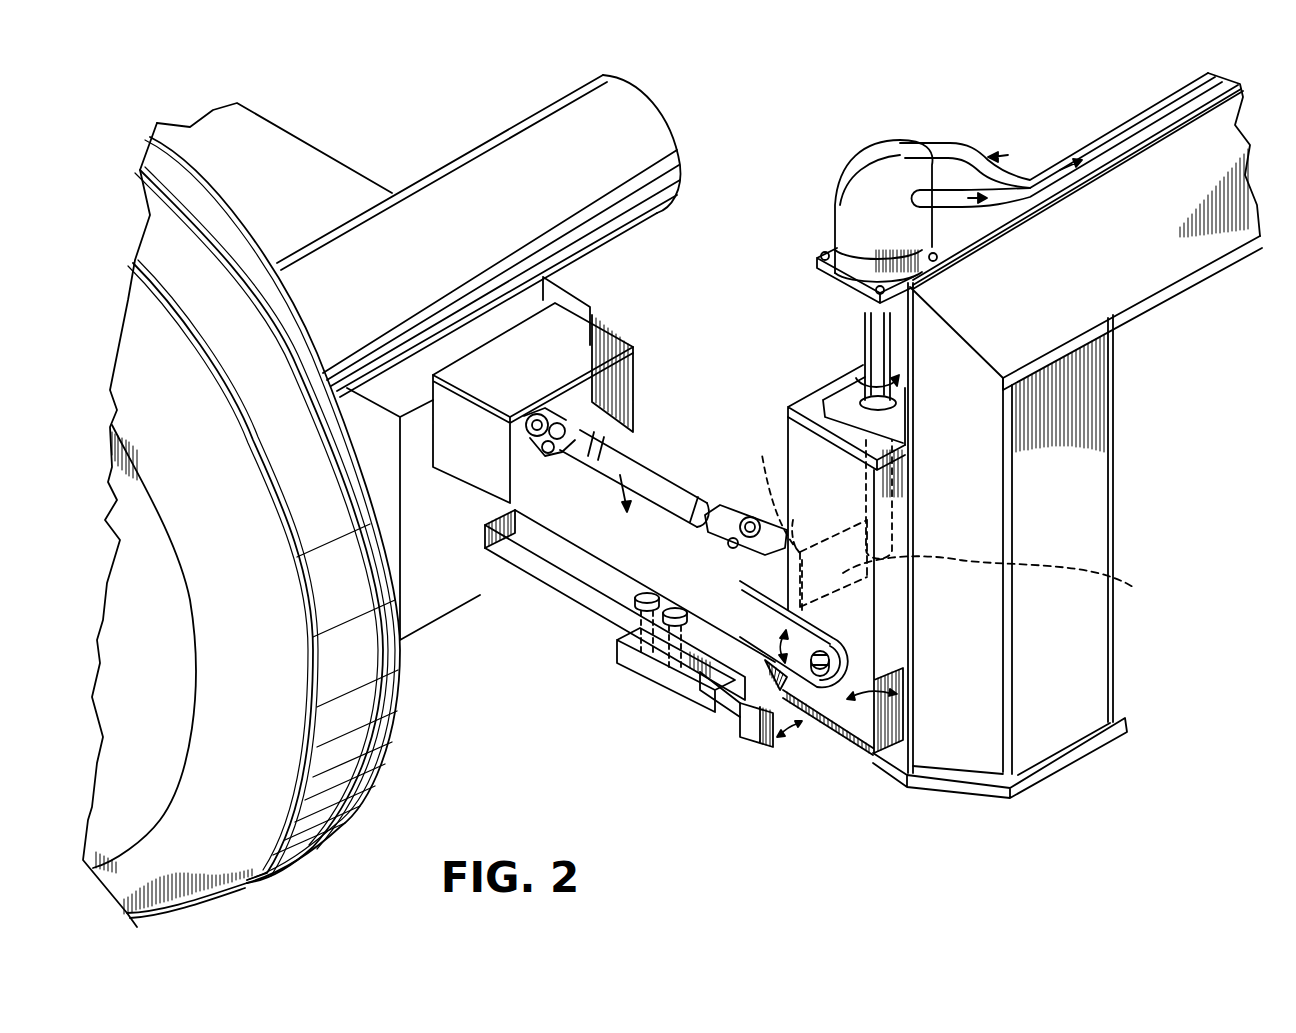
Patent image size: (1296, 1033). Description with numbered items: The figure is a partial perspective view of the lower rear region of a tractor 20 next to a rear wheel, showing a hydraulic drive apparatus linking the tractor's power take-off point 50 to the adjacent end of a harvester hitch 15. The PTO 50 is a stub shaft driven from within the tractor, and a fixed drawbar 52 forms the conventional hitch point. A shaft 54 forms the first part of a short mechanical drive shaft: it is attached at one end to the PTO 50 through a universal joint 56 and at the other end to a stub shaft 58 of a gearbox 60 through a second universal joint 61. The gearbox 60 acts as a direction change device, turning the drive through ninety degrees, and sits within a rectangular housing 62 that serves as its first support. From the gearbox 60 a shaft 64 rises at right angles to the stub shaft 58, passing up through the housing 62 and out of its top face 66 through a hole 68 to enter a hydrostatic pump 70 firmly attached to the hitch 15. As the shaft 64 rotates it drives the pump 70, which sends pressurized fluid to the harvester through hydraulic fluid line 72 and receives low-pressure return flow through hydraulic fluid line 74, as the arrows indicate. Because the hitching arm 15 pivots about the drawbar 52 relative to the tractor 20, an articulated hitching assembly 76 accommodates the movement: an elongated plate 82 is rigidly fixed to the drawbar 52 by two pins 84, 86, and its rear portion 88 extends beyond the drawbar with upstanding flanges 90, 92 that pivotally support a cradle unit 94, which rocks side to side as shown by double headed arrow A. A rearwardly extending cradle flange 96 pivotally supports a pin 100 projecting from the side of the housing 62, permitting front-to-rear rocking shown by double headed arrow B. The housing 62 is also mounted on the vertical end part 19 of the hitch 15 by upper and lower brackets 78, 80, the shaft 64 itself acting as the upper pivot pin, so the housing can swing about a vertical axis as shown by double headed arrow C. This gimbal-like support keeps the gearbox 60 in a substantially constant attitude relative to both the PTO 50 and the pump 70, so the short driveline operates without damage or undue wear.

The harvester hitch 15 is at (1093, 258).
The vertical end part 19 is at (1100, 535).
The tractor 20 is at (352, 130).
The power take-off point 50 is at (590, 405).
The fixed drawbar 52 is at (548, 566).
The shaft 54 is at (660, 470).
The universal joint 56 is at (530, 423).
The stub shaft 58 is at (768, 515).
The gearbox 60 is at (1000, 572).
The universal joint 61 is at (750, 524).
The rectangular housing 62 is at (803, 488).
The shaft 64 is at (880, 352).
The top face 66 is at (815, 398).
The hole 68 is at (896, 403).
The hydrostatic pump 70 is at (866, 188).
The hydraulic fluid line 72 is at (1000, 160).
The hydraulic fluid line 74 is at (1092, 148).
The articulated hitching assembly 76 is at (760, 400).
The bracket 78 is at (843, 372).
The bracket 80 is at (850, 738).
The elongated plate 82 is at (640, 672).
The pin 84 is at (641, 598).
The pin 86 is at (680, 613).
The rear portion 88 is at (740, 715).
The upstanding flange 90 is at (700, 672).
The upstanding flange 92 is at (776, 695).
The cradle unit 94 is at (740, 703).
The cradle flange 96 is at (907, 660).
The pin 100 is at (828, 655).
The double headed arrow A is at (790, 735).
The double headed arrow B is at (760, 603).
The double headed arrow C is at (858, 745).